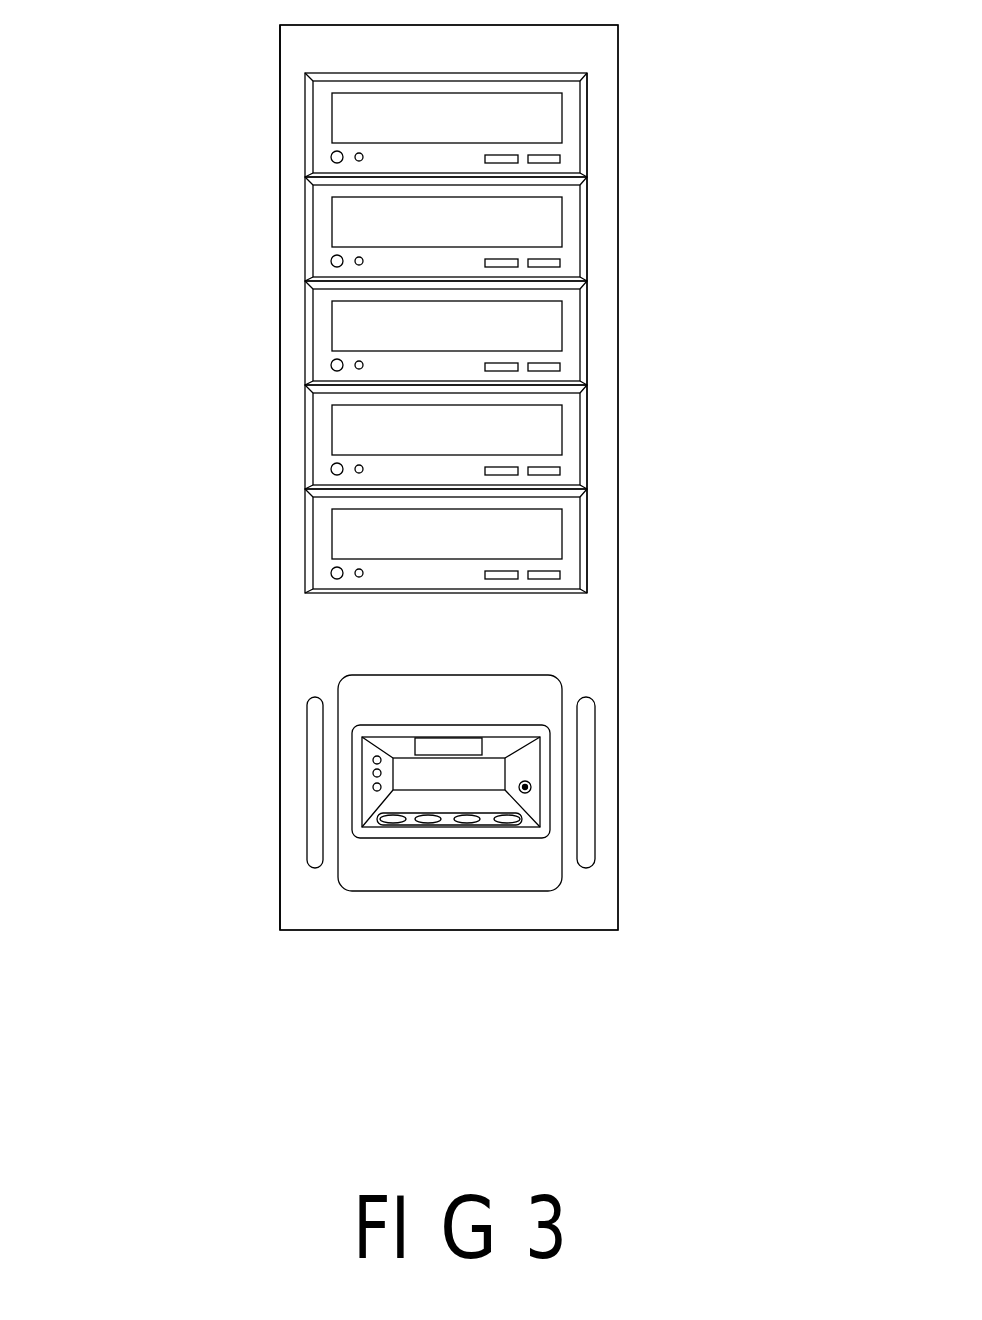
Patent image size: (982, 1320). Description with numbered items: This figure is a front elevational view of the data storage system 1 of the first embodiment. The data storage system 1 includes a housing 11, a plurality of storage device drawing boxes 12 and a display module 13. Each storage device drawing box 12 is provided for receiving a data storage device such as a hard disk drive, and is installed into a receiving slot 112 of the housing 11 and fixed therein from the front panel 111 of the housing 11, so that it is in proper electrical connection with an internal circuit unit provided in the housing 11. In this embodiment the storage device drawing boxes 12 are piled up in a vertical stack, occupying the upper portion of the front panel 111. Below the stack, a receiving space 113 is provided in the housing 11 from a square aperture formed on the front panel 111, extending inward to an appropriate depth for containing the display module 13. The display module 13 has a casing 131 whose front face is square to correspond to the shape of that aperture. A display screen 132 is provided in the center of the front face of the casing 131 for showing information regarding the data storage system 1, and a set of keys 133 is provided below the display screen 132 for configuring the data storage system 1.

The data storage system 1 is at (245, 104).
The housing 11 is at (630, 77).
The front panel 111 is at (297, 338).
The receiving slot 112 is at (583, 237).
The receiving space 113 is at (562, 883).
The storage device drawing box 12 is at (538, 213).
The display module 13 is at (449, 806).
The casing 131 is at (395, 860).
The display screen 132 is at (472, 773).
The set of keys 133 is at (467, 823).